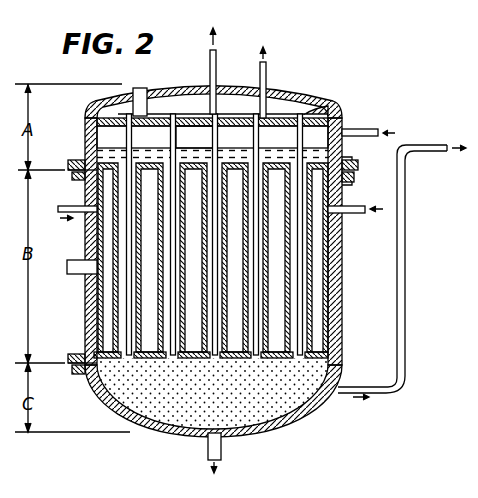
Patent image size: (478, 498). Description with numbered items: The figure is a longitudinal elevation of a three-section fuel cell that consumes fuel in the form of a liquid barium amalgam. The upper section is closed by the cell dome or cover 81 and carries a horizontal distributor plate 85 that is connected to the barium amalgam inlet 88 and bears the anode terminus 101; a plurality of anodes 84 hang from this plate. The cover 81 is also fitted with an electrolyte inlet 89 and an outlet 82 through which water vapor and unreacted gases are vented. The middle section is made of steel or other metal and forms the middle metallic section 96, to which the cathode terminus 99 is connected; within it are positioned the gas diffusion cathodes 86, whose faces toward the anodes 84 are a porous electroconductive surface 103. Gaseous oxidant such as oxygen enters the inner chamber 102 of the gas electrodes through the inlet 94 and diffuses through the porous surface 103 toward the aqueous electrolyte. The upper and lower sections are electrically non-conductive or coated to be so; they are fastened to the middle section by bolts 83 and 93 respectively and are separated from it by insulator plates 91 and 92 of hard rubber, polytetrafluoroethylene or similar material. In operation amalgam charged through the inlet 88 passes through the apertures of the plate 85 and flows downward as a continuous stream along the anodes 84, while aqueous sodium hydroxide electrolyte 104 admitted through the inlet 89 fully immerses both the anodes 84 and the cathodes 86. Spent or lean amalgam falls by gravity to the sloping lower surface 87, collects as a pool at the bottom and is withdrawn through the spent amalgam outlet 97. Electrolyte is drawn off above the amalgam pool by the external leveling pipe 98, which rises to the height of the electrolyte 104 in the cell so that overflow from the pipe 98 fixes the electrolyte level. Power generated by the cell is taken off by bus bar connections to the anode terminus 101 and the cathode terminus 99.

The cell dome 81 is at (200, 92).
The outlet 82 is at (217, 52).
The bolts 83 is at (73, 160).
The anodes 84 is at (167, 137).
The horizontal distributor plate 85 is at (194, 138).
The gas diffusion cathodes 86 is at (187, 358).
The sloping lower surface 87 is at (170, 426).
The barium amalgam inlet 88 is at (267, 72).
The electrolyte inlet 89 is at (364, 129).
The insulator plate 91 is at (70, 173).
The insulator plate 92 is at (70, 366).
The bolts 93 is at (72, 354).
The inlet 94 is at (60, 212).
The middle metallic section 96 is at (340, 246).
The spent amalgam outlet 97 is at (221, 442).
The leveling pipe 98 is at (422, 145).
The cathode terminus 99 is at (72, 274).
The anode terminus 101 is at (138, 88).
The inner chamber 102 is at (100, 248).
The porous electroconductive surface 103 is at (262, 276).
The electrolyte 104 is at (344, 166).